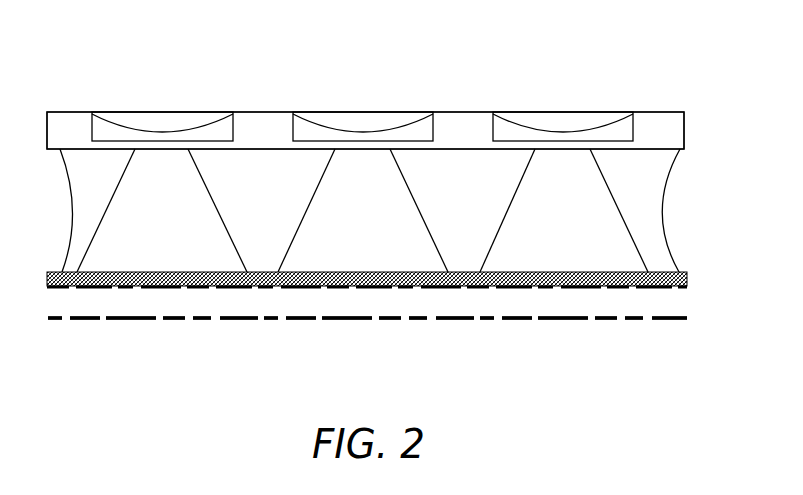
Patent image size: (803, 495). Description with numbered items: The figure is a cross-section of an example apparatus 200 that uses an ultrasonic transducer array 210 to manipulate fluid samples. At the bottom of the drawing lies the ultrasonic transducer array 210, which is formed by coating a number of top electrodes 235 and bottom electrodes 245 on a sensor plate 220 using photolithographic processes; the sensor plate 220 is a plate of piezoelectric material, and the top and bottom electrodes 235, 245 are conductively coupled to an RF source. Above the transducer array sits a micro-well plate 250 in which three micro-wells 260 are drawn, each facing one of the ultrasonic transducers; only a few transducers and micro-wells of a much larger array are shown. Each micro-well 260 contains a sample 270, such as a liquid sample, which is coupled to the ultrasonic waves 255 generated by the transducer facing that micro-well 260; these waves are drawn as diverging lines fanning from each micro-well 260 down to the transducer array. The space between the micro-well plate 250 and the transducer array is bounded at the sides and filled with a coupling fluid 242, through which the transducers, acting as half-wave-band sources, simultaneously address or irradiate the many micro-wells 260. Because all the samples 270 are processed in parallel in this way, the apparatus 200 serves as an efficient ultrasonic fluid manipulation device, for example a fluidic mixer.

The apparatus 200 is at (624, 34).
The ultrasonic transducer array 210 is at (289, 325).
The sensor plate 220 is at (674, 305).
The top electrodes 235 is at (560, 283).
The coupling fluid 242 is at (664, 199).
The bottom electrodes 245 is at (563, 320).
The micro-well plate 250 is at (72, 112).
The ultrasonic waves 255 is at (507, 208).
The micro-well 260 is at (616, 111).
The sample 270 is at (518, 130).